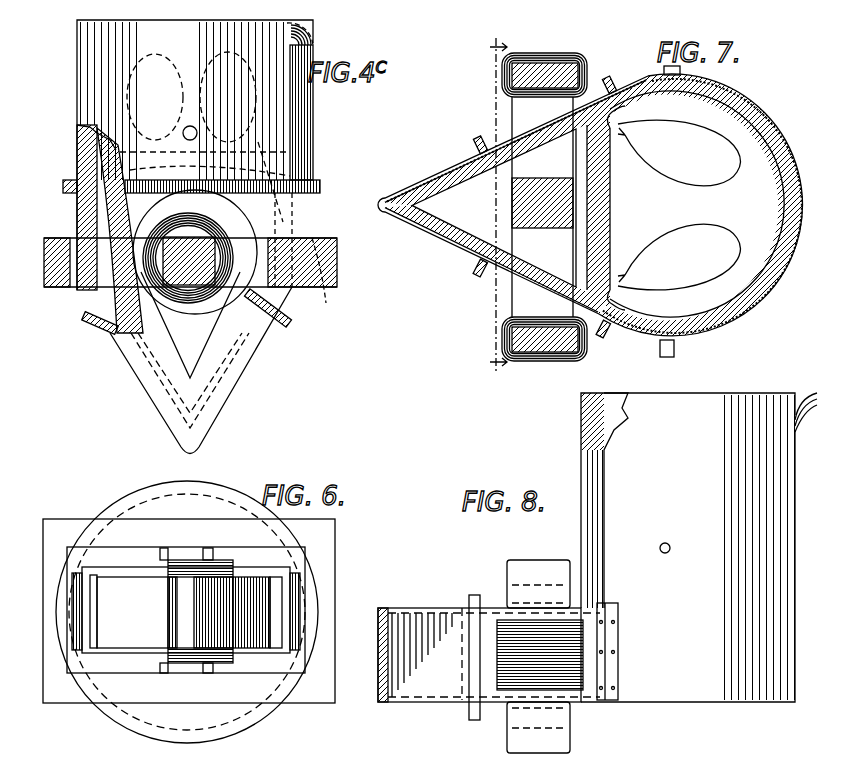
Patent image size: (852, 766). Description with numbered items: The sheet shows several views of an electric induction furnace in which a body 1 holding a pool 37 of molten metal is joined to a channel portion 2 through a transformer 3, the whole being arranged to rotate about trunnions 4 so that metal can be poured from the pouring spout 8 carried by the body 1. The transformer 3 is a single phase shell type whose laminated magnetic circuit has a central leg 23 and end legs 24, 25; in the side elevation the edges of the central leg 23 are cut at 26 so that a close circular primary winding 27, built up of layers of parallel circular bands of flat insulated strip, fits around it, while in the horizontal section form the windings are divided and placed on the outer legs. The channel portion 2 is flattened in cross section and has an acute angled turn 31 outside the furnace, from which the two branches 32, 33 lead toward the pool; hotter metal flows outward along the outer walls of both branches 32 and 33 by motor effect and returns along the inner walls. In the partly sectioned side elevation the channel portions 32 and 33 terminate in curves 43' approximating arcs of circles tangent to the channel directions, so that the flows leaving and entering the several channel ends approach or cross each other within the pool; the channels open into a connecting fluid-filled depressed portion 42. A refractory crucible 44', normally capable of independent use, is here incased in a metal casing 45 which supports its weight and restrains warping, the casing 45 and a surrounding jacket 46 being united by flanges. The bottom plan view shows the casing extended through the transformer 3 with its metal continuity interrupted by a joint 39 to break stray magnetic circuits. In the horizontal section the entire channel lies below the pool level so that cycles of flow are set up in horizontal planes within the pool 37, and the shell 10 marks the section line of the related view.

In FIG. 4C, the body 1 is at (77, 72).
In FIG. 7, the body 1 is at (784, 142).
In FIG. 6, the body 1 is at (142, 490).
In FIG. 8, the body 1 is at (699, 547).
In FIG. 4C, the channel portion 2 is at (155, 409).
In FIG. 7, the channel portion 2 is at (433, 181).
In FIG. 6, the channel portion 2 is at (186, 610).
In FIG. 8, the channel portion 2 is at (498, 652).
In FIG. 4C, the transformer 3 is at (330, 265).
In FIG. 6, the transformer 3 is at (328, 560).
In FIG. 7, the trunnions 4 is at (662, 69).
In FIG. 8, the trunnions 4 is at (668, 544).
In FIG. 4C, the pouring spout 8 is at (309, 36).
In FIG. 8, the pouring spout 8 is at (803, 396).
In FIG. 7, the shell 10 is at (500, 205).
In FIG. 4C, the central leg 23 is at (194, 243).
In FIG. 6, the central leg 23 is at (183, 556).
In FIG. 4C, the end leg 24 is at (328, 280).
In FIG. 6, the end leg 24 is at (323, 593).
In FIG. 4C, the end leg 25 is at (53, 288).
In FIG. 6, the end leg 25 is at (54, 672).
In FIG. 4C, the cut edges of central leg 26 is at (165, 238).
In FIG. 6, the cut edges of central leg 26 is at (163, 668).
In FIG. 4C, the primary winding 27 is at (190, 304).
In FIG. 6, the primary winding 27 is at (228, 668).
In FIG. 4C, the acute-angled turn 31 is at (198, 427).
In FIG. 7, the acute-angled turn 31 is at (423, 210).
In FIG. 4C, the channel branch 32 is at (228, 363).
In FIG. 7, the channel branch 32 is at (562, 350).
In FIG. 8, the channel branch 32 is at (532, 567).
In FIG. 4C, the channel branch 33 is at (155, 367).
In FIG. 7, the channel branch 33 is at (452, 190).
In FIG. 7, the pool 37 is at (679, 205).
In FIG. 6, the joint 39 is at (84, 613).
In FIG. 4C, the depressed portion 42 is at (86, 167).
In FIG. 4C, the curves 43' is at (192, 233).
In FIG. 4C, the crucible 44' is at (195, 126).
In FIG. 4C, the casing 45 is at (110, 338).
In FIG. 7, the casing 45 is at (527, 273).
In FIG. 8, the casing 45 is at (495, 700).
In FIG. 7, the jacket 46 is at (760, 297).
In FIG. 8, the jacket 46 is at (683, 620).